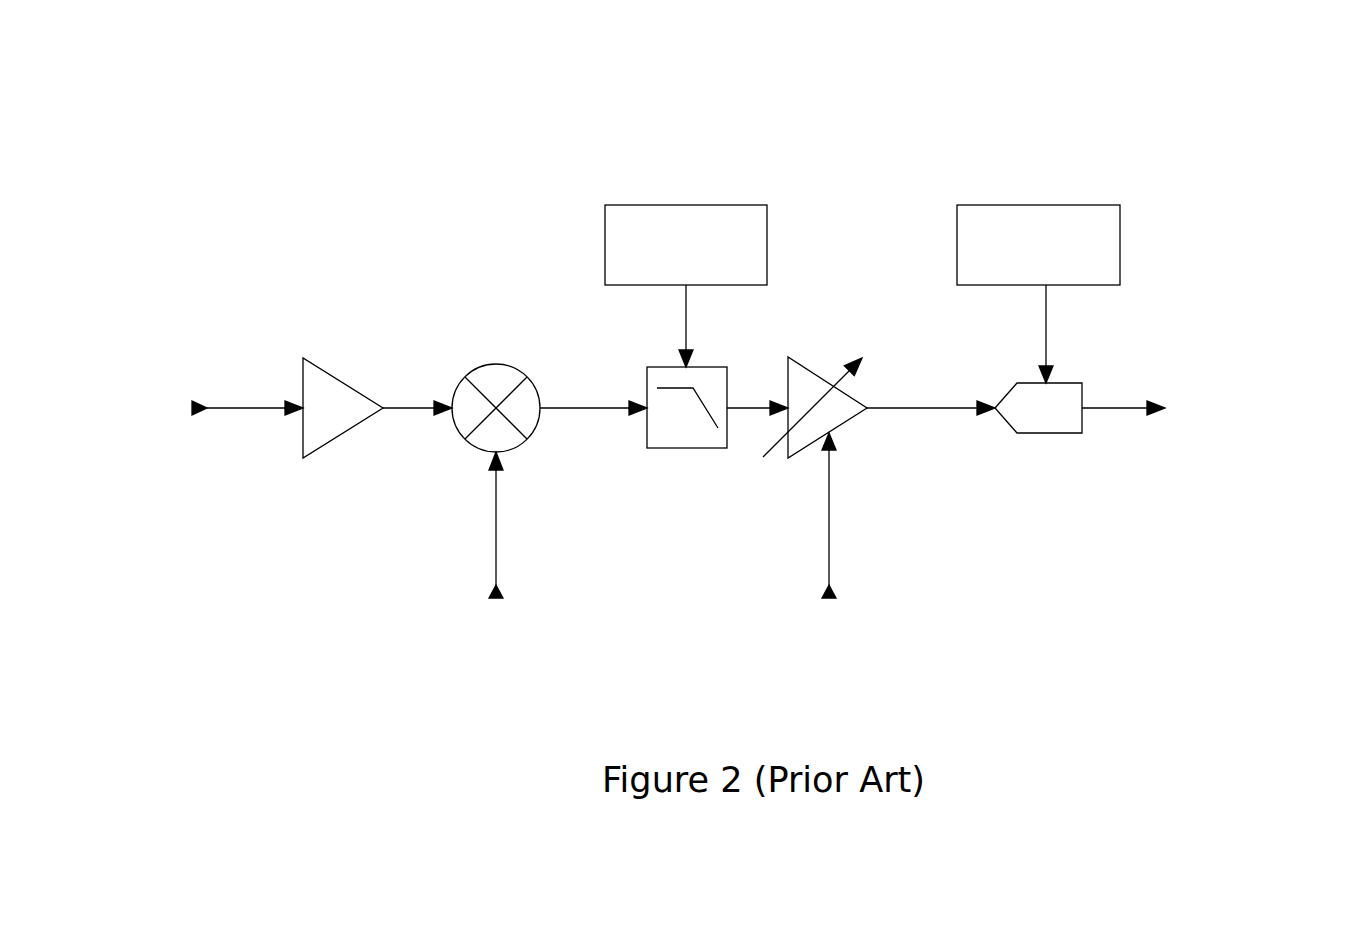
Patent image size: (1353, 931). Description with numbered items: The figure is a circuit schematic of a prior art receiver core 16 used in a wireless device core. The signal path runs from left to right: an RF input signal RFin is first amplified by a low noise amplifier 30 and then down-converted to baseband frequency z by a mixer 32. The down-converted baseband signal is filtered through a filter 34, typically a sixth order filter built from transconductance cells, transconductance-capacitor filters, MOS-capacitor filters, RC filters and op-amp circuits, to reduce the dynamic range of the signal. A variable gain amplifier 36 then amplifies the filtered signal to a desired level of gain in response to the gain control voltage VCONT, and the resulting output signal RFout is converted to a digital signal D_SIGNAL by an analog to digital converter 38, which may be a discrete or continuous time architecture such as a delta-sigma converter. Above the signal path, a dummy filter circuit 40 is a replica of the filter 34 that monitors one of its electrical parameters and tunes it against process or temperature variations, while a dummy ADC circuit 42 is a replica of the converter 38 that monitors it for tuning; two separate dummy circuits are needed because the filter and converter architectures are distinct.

The receiver core 16 is at (575, 90).
The low noise amplifier 30 is at (330, 443).
The mixer 32 is at (462, 438).
The filter 34 is at (684, 448).
The variable gain amplifier 36 is at (847, 422).
The analog to digital converter 38 is at (1046, 433).
The dummy filter circuit 40 is at (693, 204).
The dummy ADC circuit 42 is at (1047, 203).